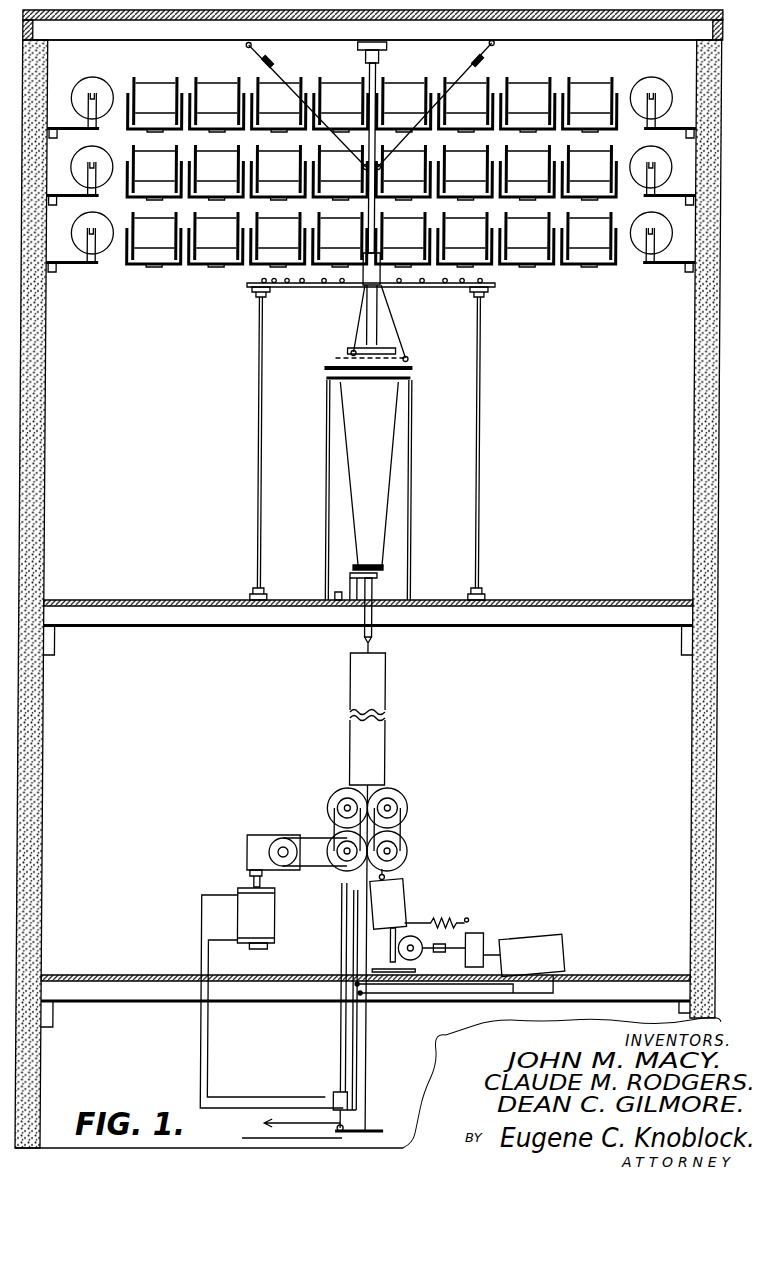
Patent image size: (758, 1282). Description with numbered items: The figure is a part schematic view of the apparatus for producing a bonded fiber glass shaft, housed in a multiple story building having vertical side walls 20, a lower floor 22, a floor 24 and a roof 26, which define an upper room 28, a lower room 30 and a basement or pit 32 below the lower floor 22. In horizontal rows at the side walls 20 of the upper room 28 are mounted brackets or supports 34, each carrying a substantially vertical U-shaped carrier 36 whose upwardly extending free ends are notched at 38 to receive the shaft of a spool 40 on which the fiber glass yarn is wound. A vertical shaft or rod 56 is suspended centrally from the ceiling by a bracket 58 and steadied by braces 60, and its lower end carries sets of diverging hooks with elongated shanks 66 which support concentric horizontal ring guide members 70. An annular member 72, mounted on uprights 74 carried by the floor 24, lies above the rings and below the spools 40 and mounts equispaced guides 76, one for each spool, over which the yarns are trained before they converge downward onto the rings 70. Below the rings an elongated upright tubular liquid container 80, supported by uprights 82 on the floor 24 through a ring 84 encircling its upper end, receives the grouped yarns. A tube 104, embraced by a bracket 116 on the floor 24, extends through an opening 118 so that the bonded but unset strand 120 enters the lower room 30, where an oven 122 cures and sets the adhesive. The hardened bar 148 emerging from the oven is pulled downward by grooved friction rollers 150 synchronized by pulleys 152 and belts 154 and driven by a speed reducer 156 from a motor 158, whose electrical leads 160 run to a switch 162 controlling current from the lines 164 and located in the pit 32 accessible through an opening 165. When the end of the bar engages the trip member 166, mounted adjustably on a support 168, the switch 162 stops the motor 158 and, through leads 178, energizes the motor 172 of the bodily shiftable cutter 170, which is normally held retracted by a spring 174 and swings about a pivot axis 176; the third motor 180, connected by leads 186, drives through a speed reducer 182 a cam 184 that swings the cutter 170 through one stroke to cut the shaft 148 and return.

The side walls 20 is at (48, 768).
The lower floor 22 is at (86, 975).
The floor 24 is at (101, 600).
The roof 26 is at (150, 40).
The upper room 28 is at (117, 503).
The lower room 30 is at (118, 839).
The basement or pit 32 is at (98, 1066).
The brackets or supports 34 is at (662, 266).
The U-shaped carrier 36 is at (92, 268).
The notches 38 is at (91, 93).
The spool 40 is at (594, 93).
The vertical shaft or rod 56 is at (378, 60).
The bracket 58 is at (358, 46).
The braces 60 is at (485, 60).
The hook shanks 66 is at (392, 316).
The ring guide member 70 is at (358, 356).
The annular member 72 is at (497, 287).
The uprights 74 is at (482, 410).
The guides 76 is at (303, 287).
The liquid container 80 is at (395, 480).
The uprights 82 is at (414, 507).
The ring 84 is at (381, 385).
The tube 104 is at (380, 640).
The bracket 116 is at (385, 578).
The opening 118 is at (362, 640).
The bonded strand 120 is at (385, 660).
The heater or oven 122 is at (380, 725).
The fiber glass strand or bar 148 is at (388, 780).
The friction rollers 150 is at (410, 851).
The pulleys 152 is at (405, 858).
The belts 154 is at (407, 830).
The speed reducer 156 is at (253, 850).
The motor 158 is at (268, 935).
The electrical leads 160 is at (210, 1053).
The switch 162 is at (340, 1098).
The lines 164 is at (280, 1123).
The opening 165 is at (296, 995).
The trip member 166 is at (382, 1130).
The support 168 is at (348, 1030).
The cutter 170 is at (413, 972).
The motor 172 is at (405, 905).
The spring 174 is at (455, 920).
The pivot axis 176 is at (400, 887).
The leads 178 is at (362, 1062).
The third motor 180 is at (555, 945).
The speed reducer 182 is at (490, 940).
The cam 184 is at (450, 942).
The leads 186 is at (440, 990).